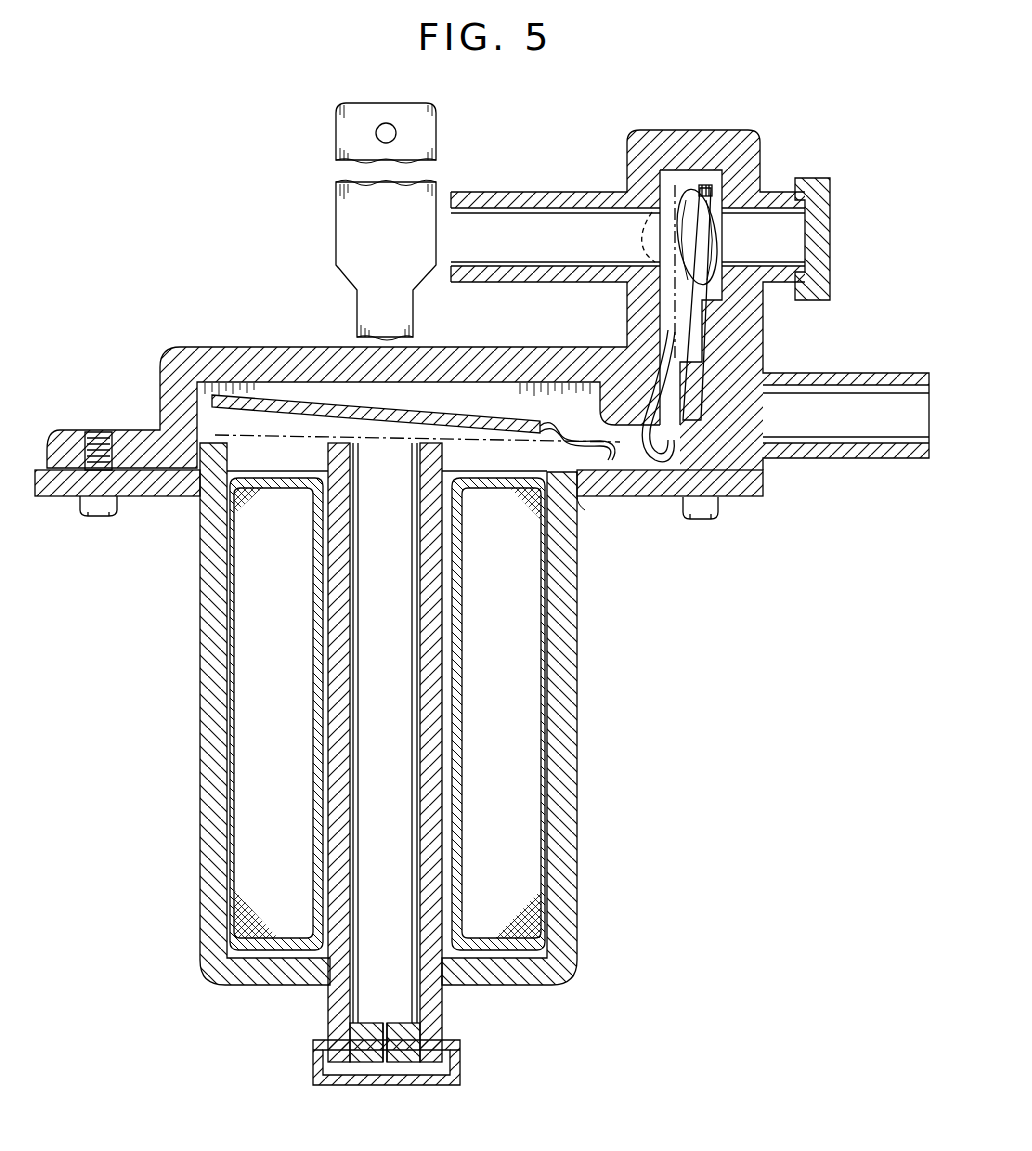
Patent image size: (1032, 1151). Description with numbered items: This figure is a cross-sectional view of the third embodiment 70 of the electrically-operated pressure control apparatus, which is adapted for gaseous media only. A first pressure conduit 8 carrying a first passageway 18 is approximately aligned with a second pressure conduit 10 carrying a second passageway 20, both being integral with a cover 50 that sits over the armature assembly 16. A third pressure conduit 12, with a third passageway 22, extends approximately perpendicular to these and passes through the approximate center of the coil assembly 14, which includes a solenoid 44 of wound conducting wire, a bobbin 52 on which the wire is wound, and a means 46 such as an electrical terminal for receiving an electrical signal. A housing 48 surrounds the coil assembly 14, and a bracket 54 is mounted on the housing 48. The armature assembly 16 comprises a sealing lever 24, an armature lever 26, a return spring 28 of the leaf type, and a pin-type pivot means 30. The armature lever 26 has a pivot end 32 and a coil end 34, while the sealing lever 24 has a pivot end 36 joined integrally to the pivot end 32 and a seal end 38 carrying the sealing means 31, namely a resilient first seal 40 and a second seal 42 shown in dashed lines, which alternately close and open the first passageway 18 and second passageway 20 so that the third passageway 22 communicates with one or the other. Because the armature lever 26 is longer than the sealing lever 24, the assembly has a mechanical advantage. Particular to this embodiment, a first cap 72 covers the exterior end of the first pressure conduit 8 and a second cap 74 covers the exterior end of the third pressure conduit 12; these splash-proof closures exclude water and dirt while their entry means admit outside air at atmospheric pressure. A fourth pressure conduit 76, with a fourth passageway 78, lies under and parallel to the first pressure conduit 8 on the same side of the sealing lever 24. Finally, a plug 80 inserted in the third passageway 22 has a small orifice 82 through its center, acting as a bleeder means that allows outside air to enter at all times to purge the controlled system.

The first pressure conduit 8 is at (778, 190).
The second pressure conduit 10 is at (540, 190).
The third pressure conduit 12 is at (342, 522).
The coil assembly 14 is at (180, 770).
The armature assembly 16 is at (542, 348).
The first passageway 18 is at (788, 252).
The second passageway 20 is at (541, 252).
The third passageway 22 is at (397, 591).
The sealing lever 24 is at (702, 297).
The armature lever 26 is at (300, 435).
The return spring 28 is at (658, 385).
The pivot means 30 is at (630, 520).
The sealing means 31 is at (664, 98).
The pivot end 32 is at (580, 442).
The coil end 34 is at (215, 398).
The pivot end 36 is at (678, 412).
The seal end 38 is at (704, 185).
The first seal 40 is at (718, 205).
The second seal 42 is at (683, 238).
The solenoid 44 is at (282, 591).
The means for receiving an electrical signal 46 is at (346, 228).
The housing 48 is at (215, 684).
The cover 50 is at (250, 347).
The bobbin 52 is at (325, 742).
The bracket 54 is at (55, 490).
The third embodiment 70 is at (672, 850).
The first cap 72 is at (825, 180).
The second cap 74 is at (460, 1062).
The fourth pressure conduit 76 is at (861, 458).
The fourth passageway 78 is at (820, 427).
The plug 80 is at (405, 1032).
The orifice 82 is at (384, 1022).